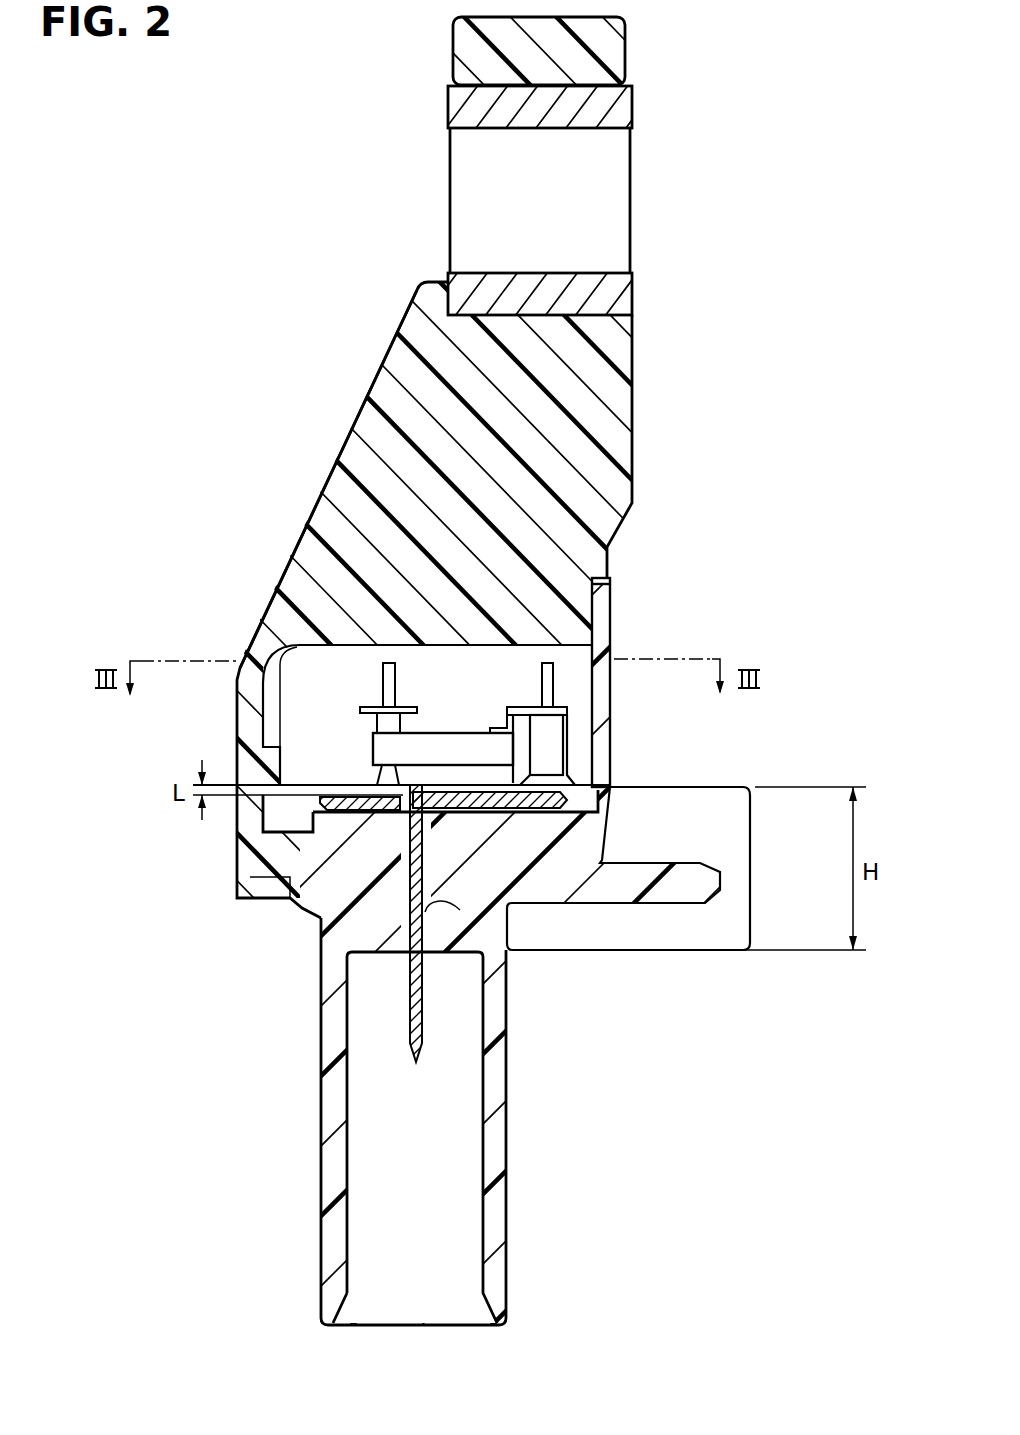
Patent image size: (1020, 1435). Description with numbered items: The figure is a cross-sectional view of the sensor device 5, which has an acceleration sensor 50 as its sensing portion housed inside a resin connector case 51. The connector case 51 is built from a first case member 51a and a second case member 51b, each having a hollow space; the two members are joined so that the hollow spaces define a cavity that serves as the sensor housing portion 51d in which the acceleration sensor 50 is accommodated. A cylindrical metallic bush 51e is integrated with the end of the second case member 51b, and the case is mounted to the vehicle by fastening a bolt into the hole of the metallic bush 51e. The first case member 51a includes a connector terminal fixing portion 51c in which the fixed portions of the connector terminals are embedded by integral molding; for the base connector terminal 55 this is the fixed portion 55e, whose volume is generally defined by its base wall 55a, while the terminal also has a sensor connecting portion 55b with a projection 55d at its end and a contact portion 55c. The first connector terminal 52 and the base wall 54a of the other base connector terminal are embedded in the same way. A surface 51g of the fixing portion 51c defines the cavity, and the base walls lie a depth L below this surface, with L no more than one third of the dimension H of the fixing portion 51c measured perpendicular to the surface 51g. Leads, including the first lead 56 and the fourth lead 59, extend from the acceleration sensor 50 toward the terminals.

The sensor device 5 is at (692, 237).
The acceleration sensor 50 is at (440, 733).
The connector case 51 is at (632, 472).
The first case member 51a is at (322, 950).
The second case member 51b is at (330, 470).
The connector terminal fixing portion 51c is at (743, 787).
The sensor housing portion 51d is at (307, 710).
The metallic bush 51e is at (450, 180).
The surface of the fixing portion 51g is at (357, 783).
The first connector terminal 52 is at (397, 669).
The base wall 54a is at (350, 805).
The base connector terminal 55 is at (557, 727).
The base wall 55a is at (545, 806).
The sensor connecting portion 55b is at (550, 750).
The contact portion 55c is at (416, 1012).
The projection 55d is at (553, 680).
The fixed portion 55e is at (460, 910).
The first lead 56 is at (370, 708).
The fourth lead 59 is at (523, 707).